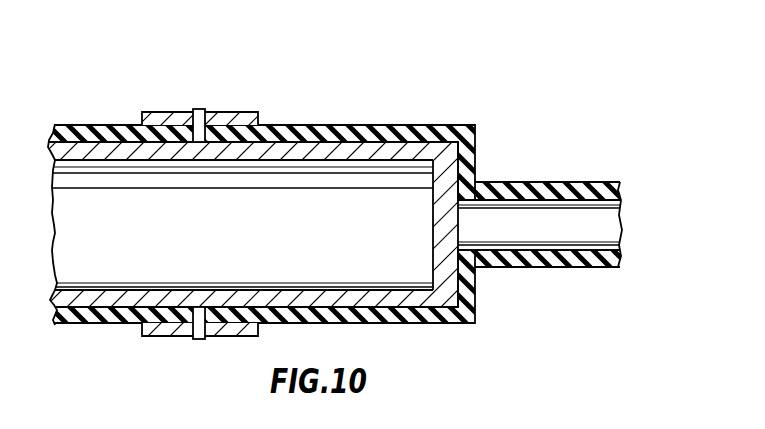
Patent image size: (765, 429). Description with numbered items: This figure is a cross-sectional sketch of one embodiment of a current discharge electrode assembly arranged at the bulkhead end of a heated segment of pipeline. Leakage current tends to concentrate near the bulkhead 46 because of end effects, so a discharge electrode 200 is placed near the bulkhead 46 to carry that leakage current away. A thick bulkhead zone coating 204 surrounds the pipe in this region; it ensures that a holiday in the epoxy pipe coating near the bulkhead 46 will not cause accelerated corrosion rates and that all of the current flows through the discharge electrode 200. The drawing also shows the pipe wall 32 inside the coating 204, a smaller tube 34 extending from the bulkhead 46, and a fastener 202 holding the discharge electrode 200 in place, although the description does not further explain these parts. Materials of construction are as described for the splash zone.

The discharge electrode 200 is at (162, 113).
The pin 202 is at (199, 109).
The bulkhead zone coating 204 is at (352, 127).
The inner liner 32 is at (402, 150).
The bulkhead 46 is at (458, 172).
The small tube 34 is at (600, 183).